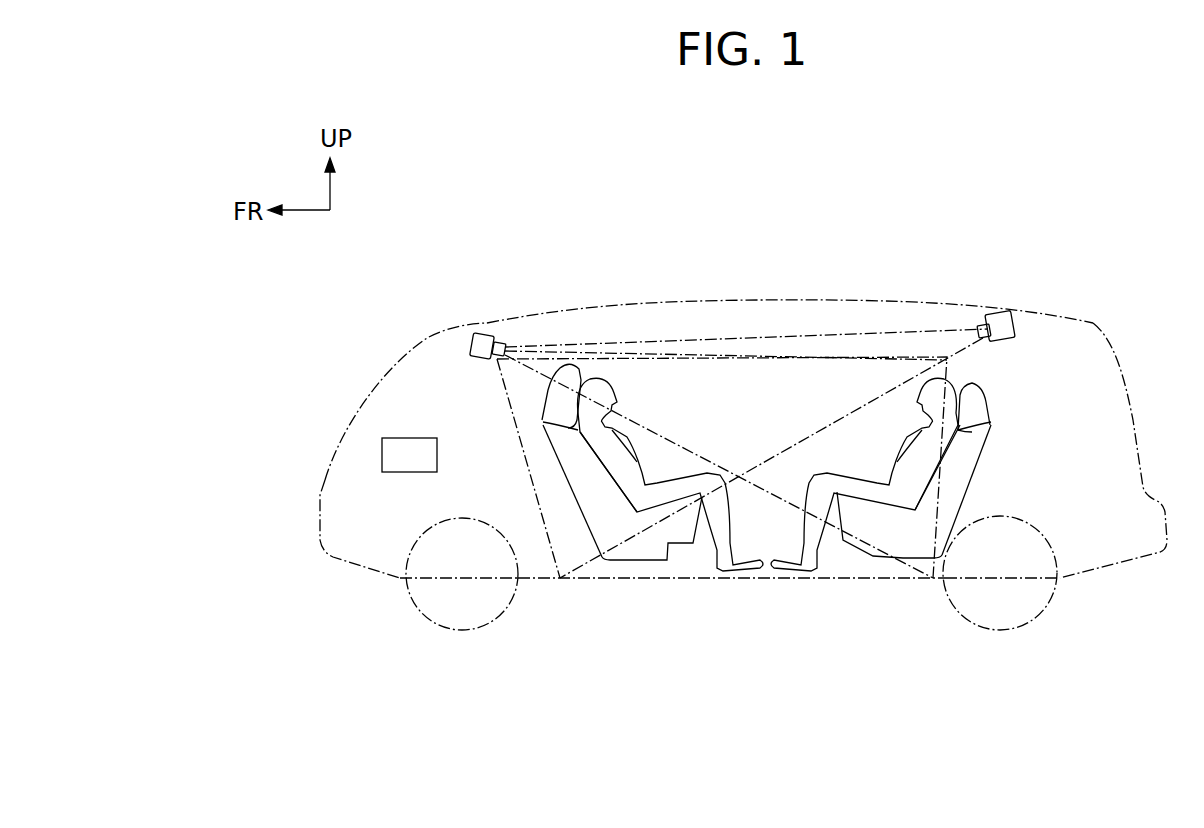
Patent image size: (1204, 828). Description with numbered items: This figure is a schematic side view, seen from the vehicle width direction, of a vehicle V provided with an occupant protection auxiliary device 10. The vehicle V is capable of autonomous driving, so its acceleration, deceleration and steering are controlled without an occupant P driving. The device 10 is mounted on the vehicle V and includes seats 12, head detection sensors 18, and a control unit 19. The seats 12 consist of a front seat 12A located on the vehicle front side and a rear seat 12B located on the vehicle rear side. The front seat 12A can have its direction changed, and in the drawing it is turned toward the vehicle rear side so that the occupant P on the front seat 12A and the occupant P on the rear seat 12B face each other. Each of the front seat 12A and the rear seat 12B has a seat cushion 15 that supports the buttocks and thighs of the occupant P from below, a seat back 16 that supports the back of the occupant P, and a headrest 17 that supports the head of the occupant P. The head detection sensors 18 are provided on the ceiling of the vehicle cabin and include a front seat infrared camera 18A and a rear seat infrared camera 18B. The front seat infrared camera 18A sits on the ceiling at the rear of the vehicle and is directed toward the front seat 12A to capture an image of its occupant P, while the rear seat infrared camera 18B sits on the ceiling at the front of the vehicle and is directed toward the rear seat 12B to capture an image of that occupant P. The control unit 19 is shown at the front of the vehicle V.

The occupant protection auxiliary device 10 is at (743, 379).
The vehicle V is at (717, 302).
The occupant P is at (960, 375).
The seats 12 is at (784, 635).
The front seat 12A is at (635, 560).
The rear seat 12B is at (1057, 583).
The seat cushion 15 is at (660, 563).
The seat back 16 is at (577, 498).
The headrest 17 is at (545, 405).
The head detection sensors 18 is at (737, 285).
The front seat infrared camera 18A is at (995, 313).
The rear seat infrared camera 18B is at (483, 333).
The control unit 19 is at (415, 438).